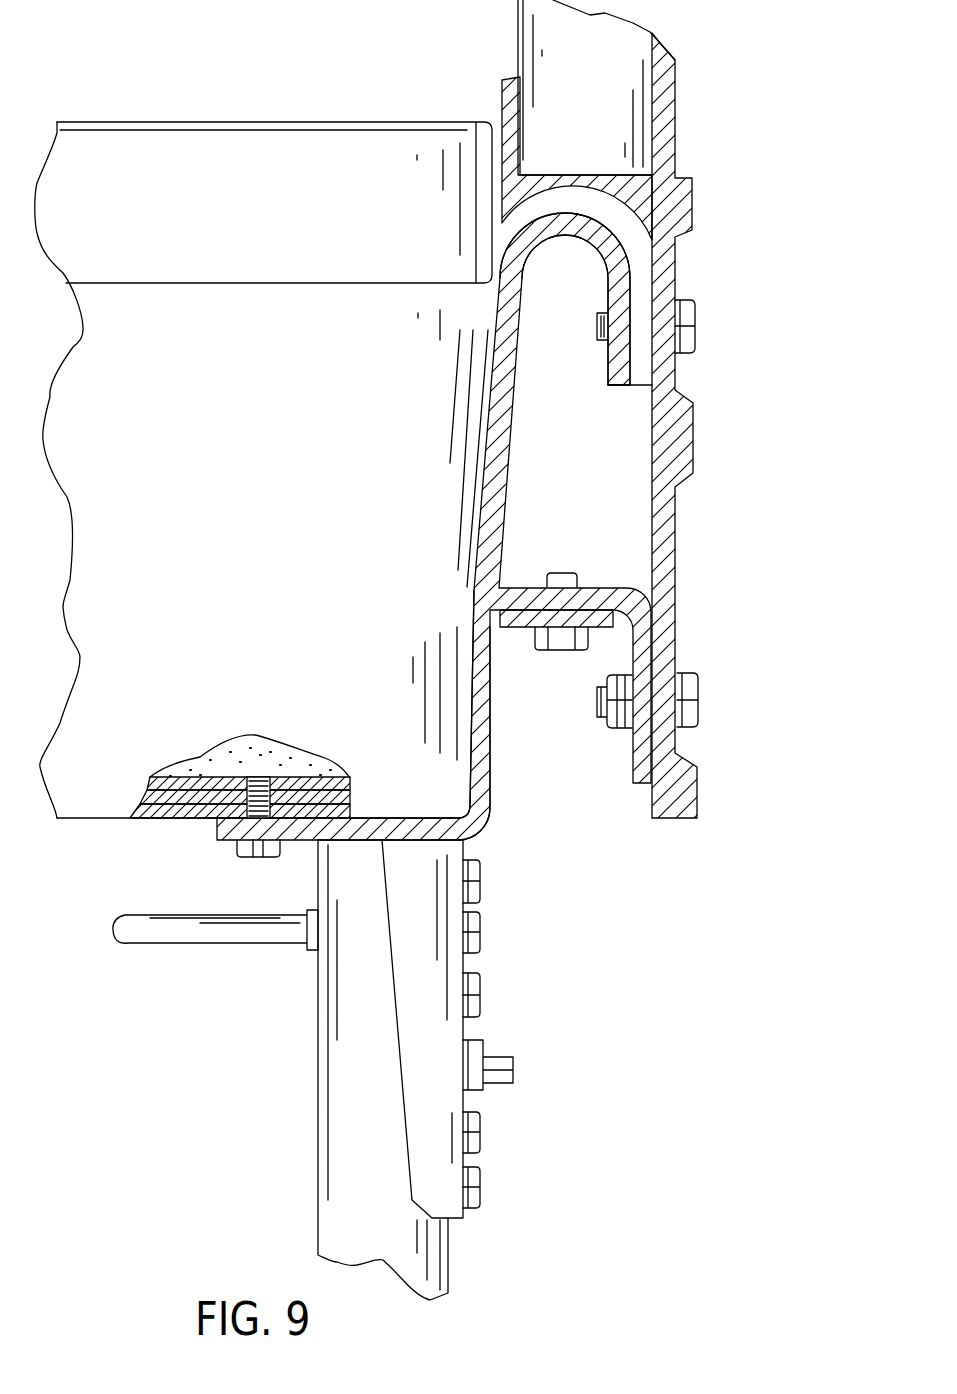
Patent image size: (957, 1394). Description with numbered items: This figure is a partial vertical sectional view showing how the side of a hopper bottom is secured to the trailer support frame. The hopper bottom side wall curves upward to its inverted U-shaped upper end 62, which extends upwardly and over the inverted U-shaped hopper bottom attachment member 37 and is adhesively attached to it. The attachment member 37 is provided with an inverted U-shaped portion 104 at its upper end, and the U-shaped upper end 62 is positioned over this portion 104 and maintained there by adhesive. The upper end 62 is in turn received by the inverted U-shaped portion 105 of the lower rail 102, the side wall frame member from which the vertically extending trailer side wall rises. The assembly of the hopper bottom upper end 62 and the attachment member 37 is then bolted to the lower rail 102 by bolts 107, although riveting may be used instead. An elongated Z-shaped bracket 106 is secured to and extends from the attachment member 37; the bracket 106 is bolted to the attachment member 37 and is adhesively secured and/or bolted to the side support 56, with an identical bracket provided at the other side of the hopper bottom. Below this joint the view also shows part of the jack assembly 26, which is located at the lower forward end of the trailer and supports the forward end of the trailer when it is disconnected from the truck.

The jack assembly 26 is at (316, 1118).
The inverted U-shaped hopper bottom attachment member 37 is at (505, 502).
The side support 56 is at (278, 699).
The inverted U-shaped upper end 62 is at (552, 205).
The lower rail 102 is at (676, 526).
The inverted U-shaped portion 104 is at (577, 223).
The inverted U-shaped portion 105 is at (620, 173).
The Z-shaped bracket 106 is at (483, 758).
The bolts 107 is at (698, 328).